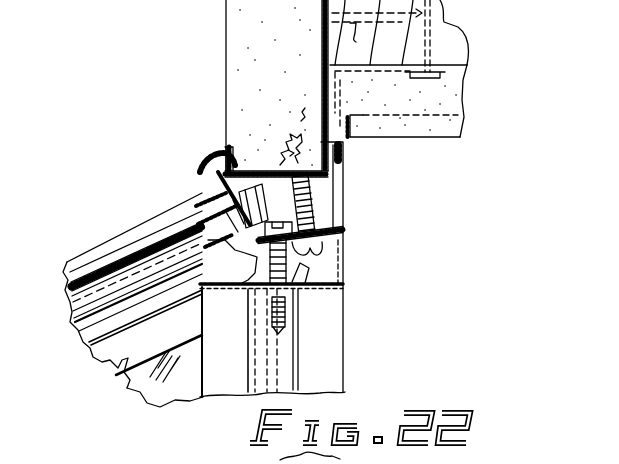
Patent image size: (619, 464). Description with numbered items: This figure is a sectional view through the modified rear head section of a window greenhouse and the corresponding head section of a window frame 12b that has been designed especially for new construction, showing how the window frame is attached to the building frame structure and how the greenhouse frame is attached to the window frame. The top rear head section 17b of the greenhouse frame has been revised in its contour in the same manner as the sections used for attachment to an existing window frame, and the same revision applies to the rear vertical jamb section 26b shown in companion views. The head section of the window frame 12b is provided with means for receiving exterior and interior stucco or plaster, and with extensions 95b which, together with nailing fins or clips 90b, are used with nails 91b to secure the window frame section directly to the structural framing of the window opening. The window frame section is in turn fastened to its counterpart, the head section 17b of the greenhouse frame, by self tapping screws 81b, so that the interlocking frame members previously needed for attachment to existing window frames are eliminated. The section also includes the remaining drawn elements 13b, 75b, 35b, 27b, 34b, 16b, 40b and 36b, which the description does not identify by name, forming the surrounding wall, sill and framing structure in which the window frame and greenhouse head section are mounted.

The post 13b is at (226, 42).
The window frame 12b is at (245, 163).
The extensions 95b is at (316, 108).
The nailing fins or clips 90b is at (410, 77).
The nails 91b is at (418, 43).
The self tapping screws 81b is at (295, 201).
The hook clip 75b is at (223, 175).
The fastener 35b is at (220, 213).
The sill 27b is at (116, 246).
The sill member 34b is at (78, 304).
The top rear head section 17b is at (223, 297).
The anchor pocket 16b is at (239, 268).
The wall panel 40b is at (207, 363).
The rear vertical jamb section 26b is at (289, 371).
The foundation 36b is at (160, 408).